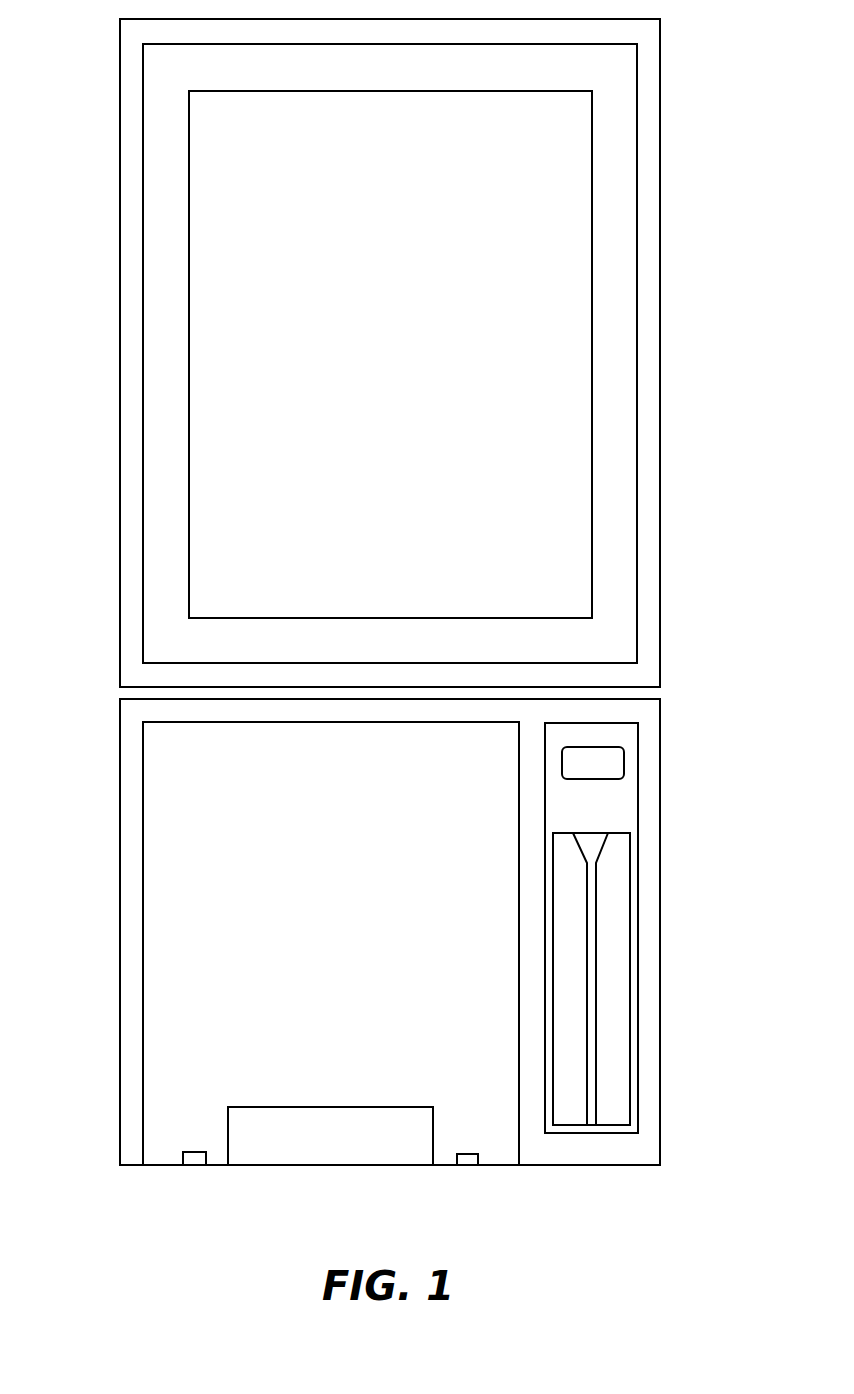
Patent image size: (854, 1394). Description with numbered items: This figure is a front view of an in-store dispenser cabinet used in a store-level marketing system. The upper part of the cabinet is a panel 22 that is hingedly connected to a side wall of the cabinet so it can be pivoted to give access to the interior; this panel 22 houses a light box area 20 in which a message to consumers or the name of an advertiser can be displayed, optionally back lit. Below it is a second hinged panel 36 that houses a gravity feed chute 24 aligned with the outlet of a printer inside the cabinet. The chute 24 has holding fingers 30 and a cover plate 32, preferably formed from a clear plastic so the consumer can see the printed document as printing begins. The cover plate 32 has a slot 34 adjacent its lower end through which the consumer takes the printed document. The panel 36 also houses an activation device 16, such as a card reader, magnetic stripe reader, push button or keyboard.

The panel 22 is at (660, 22).
The light box area 20 is at (390, 238).
The gravity feed chute 24 is at (173, 887).
The cover plate 32 is at (353, 853).
The activation device 16 is at (630, 962).
The slot 34 is at (325, 1127).
The holding fingers 30 is at (193, 1164).
The panel 36 is at (158, 1166).